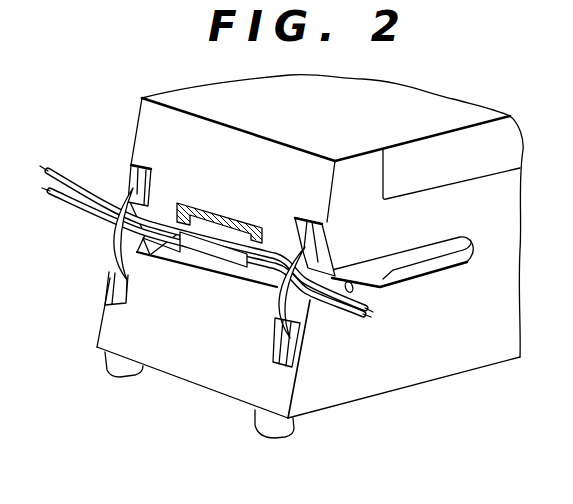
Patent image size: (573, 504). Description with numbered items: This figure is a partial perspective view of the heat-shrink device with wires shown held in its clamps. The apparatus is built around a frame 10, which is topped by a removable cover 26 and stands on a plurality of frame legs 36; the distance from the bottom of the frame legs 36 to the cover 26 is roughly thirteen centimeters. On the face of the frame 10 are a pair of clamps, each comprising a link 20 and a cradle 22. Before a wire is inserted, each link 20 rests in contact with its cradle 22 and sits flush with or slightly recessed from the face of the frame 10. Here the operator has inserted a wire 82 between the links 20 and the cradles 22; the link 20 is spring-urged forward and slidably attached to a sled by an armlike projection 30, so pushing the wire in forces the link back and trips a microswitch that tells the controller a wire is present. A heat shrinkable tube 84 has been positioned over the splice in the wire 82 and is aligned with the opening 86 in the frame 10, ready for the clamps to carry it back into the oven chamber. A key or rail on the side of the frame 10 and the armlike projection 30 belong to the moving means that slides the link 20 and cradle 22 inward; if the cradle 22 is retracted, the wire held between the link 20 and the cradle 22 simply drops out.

The frame 10 is at (133, 121).
The link 20 is at (131, 177).
The cradle 22 is at (284, 312).
The removable cover 26 is at (436, 107).
The armlike projection 30 is at (420, 260).
The frame leg 36 is at (122, 378).
The wire 82 is at (338, 309).
The heat shrinkable tube 84 is at (224, 255).
The opening 86 is at (196, 263).